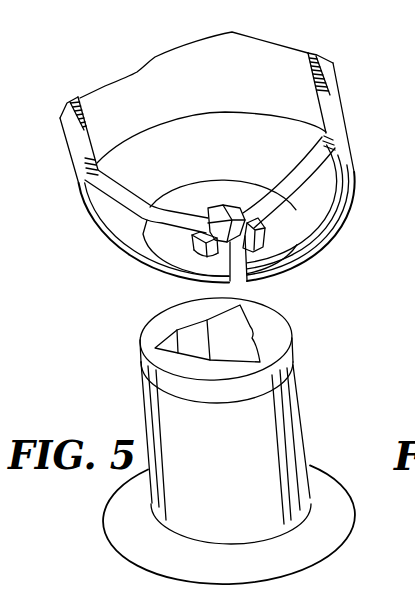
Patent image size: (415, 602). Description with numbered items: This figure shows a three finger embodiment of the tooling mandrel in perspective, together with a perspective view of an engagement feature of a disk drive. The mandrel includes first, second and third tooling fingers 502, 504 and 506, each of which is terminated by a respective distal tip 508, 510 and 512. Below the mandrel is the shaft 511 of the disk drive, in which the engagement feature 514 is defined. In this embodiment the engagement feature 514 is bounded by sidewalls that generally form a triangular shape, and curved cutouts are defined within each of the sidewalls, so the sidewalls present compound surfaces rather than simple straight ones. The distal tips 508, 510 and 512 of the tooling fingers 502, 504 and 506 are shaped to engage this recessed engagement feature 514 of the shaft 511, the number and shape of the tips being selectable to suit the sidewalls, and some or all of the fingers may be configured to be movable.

The first tooling finger 502 is at (68, 118).
The second tooling finger 504 is at (158, 66).
The third tooling finger 506 is at (333, 97).
The distal tip 508 is at (200, 250).
The distal tip 510 is at (228, 226).
The shaft 511 is at (301, 412).
The distal tip 512 is at (262, 247).
The engagement feature 514 is at (234, 340).